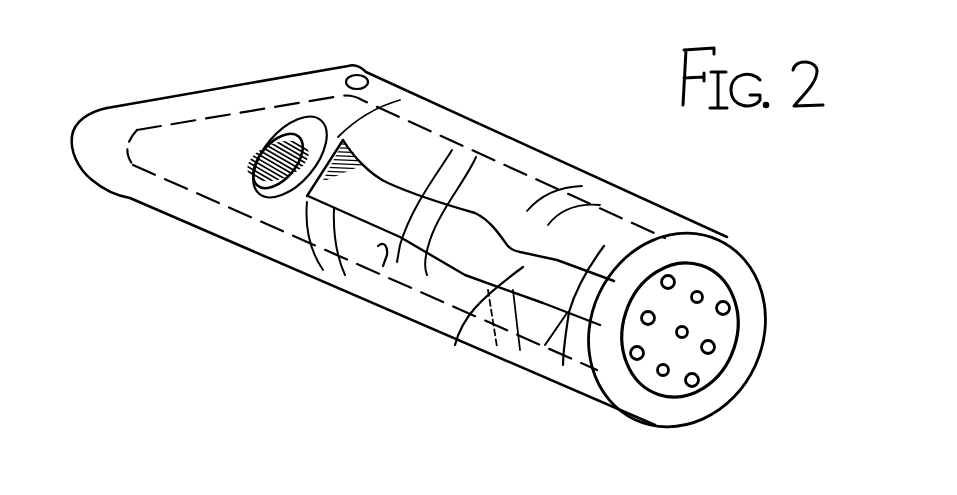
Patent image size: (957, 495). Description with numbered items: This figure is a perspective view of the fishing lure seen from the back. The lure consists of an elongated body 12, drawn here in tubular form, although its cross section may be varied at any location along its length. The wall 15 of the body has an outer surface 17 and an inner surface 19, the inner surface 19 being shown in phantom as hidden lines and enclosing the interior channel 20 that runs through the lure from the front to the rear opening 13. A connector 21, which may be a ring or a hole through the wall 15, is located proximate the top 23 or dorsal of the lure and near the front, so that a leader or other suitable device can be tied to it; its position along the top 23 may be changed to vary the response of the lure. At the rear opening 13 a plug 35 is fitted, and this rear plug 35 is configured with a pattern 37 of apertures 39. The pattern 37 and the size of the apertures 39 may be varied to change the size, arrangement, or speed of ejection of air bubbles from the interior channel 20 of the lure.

The elongated body 12 is at (290, 200).
The rear opening 13 is at (545, 345).
The wall 15 is at (146, 182).
The outer surface 17 is at (395, 300).
The inner surface 19 is at (378, 246).
The interior channel 20 is at (455, 345).
The connector 21 is at (362, 75).
The top 23 is at (502, 148).
The plug 35 is at (563, 365).
The pattern 37 is at (707, 363).
The apertures 39 is at (730, 304).